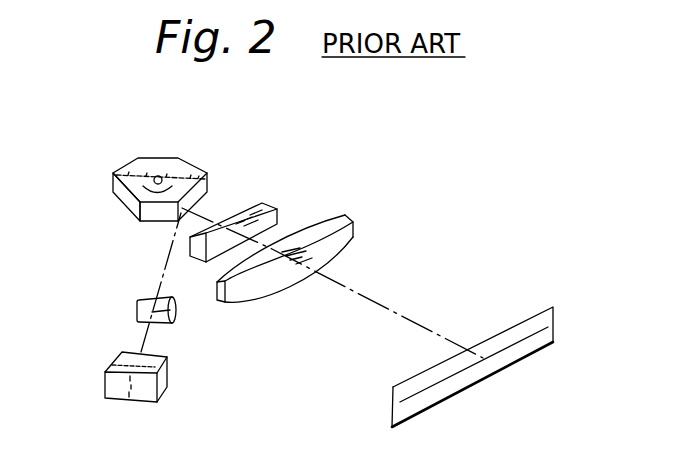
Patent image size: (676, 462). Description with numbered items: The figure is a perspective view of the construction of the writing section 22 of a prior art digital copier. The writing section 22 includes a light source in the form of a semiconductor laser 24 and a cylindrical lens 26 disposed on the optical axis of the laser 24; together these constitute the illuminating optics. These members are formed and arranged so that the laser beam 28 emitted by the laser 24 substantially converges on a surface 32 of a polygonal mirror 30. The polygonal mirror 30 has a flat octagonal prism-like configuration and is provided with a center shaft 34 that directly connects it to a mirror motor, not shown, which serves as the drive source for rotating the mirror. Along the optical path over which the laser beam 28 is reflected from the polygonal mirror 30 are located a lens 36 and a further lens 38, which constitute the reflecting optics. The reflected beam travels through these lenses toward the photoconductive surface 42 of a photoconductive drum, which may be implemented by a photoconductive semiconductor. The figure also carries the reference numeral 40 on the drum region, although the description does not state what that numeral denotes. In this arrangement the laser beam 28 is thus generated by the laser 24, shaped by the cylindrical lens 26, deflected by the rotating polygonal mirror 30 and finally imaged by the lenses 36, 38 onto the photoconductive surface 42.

The writing section 22 is at (428, 193).
The semiconductor laser 24 is at (118, 360).
The cylindrical lens 26 is at (137, 310).
The laser beam 28 is at (168, 258).
The polygonal mirror 30 is at (195, 172).
The surface 32 is at (125, 207).
The center shaft 34 is at (158, 176).
The lens 36 is at (262, 202).
The lens 38 is at (338, 217).
The scan line 40 is at (492, 350).
The photoconductive surface 42 is at (523, 327).